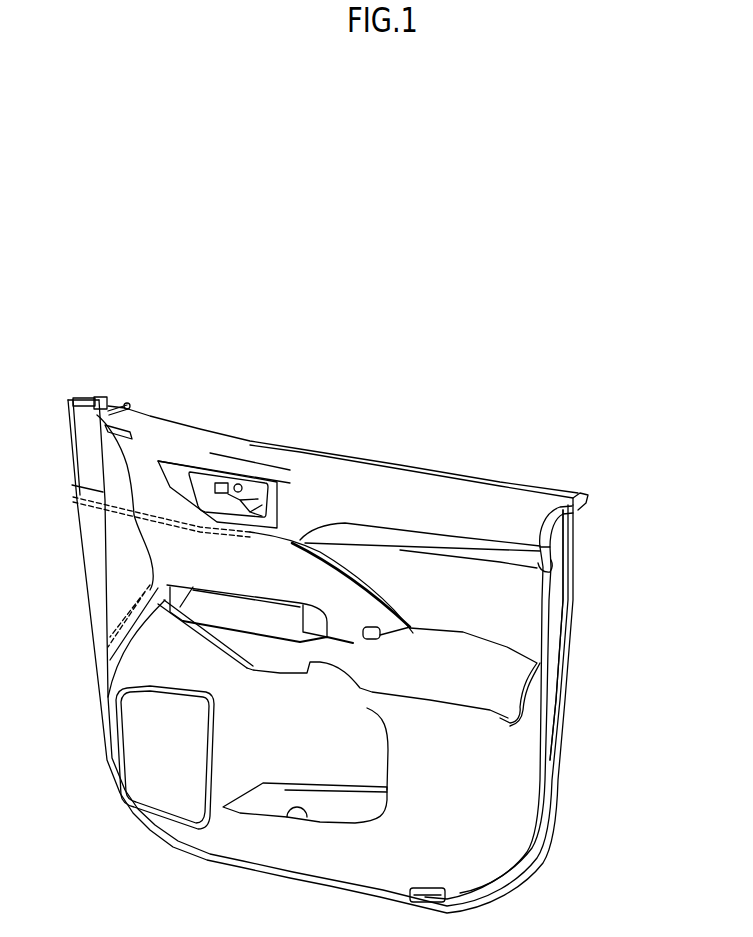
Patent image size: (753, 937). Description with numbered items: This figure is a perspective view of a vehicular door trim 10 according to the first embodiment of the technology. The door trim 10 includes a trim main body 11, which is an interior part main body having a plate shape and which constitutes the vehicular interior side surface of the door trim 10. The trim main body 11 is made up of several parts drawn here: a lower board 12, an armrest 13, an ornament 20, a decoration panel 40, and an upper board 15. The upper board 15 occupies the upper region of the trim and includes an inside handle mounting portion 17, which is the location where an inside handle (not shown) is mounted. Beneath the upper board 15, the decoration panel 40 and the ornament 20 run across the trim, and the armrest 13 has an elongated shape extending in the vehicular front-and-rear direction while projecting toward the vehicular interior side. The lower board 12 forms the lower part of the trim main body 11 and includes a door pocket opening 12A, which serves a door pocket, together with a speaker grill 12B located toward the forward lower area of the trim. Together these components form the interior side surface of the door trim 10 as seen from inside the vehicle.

The door trim 10 is at (86, 391).
The trim main body 11 is at (650, 525).
The lower board 12 is at (493, 738).
The door pocket opening 12A is at (307, 814).
The speaker grill 12B is at (148, 772).
The armrest 13 is at (503, 660).
The upper board 15 is at (533, 515).
The inside handle mounting portion 17 is at (228, 484).
The ornament 20 is at (520, 605).
The decoration panel 40 is at (521, 561).